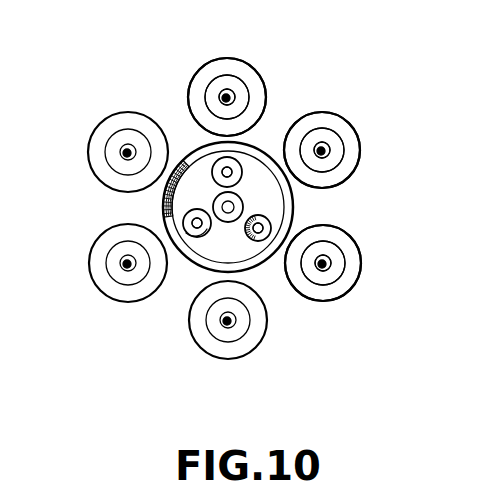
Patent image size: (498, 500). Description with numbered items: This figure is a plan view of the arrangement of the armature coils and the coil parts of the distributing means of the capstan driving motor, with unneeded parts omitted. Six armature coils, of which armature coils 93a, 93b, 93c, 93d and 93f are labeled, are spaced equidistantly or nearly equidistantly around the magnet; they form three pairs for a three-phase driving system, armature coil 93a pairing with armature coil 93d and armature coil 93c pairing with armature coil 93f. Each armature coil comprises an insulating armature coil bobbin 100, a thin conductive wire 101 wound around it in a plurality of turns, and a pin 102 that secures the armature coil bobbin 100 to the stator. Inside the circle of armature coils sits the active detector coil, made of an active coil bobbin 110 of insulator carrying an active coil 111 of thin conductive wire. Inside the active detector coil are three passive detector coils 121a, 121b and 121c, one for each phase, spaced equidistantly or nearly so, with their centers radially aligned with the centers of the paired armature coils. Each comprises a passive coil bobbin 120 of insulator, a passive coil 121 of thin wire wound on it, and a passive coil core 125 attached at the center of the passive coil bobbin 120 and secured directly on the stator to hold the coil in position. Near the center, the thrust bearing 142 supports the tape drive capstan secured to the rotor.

The armature coil 93a is at (255, 70).
The armature coil 93b is at (347, 118).
The armature coil 93c is at (359, 247).
The armature coil 93d is at (228, 360).
The armature coil 93f is at (93, 136).
The armature coil bobbin 100 is at (221, 58).
The thin conductive wire 101 is at (207, 70).
The pin 102 is at (231, 95).
The active coil bobbin 110 is at (202, 150).
The active coil 111 is at (167, 193).
The passive coil bobbin 120 is at (268, 212).
The passive coil 121 is at (224, 221).
The passive detector coil 121a is at (243, 162).
The passive detector coil 121b is at (196, 238).
The passive detector coil 121c is at (271, 229).
The passive coil core 125 is at (225, 171).
The thrust bearing 142 is at (195, 242).